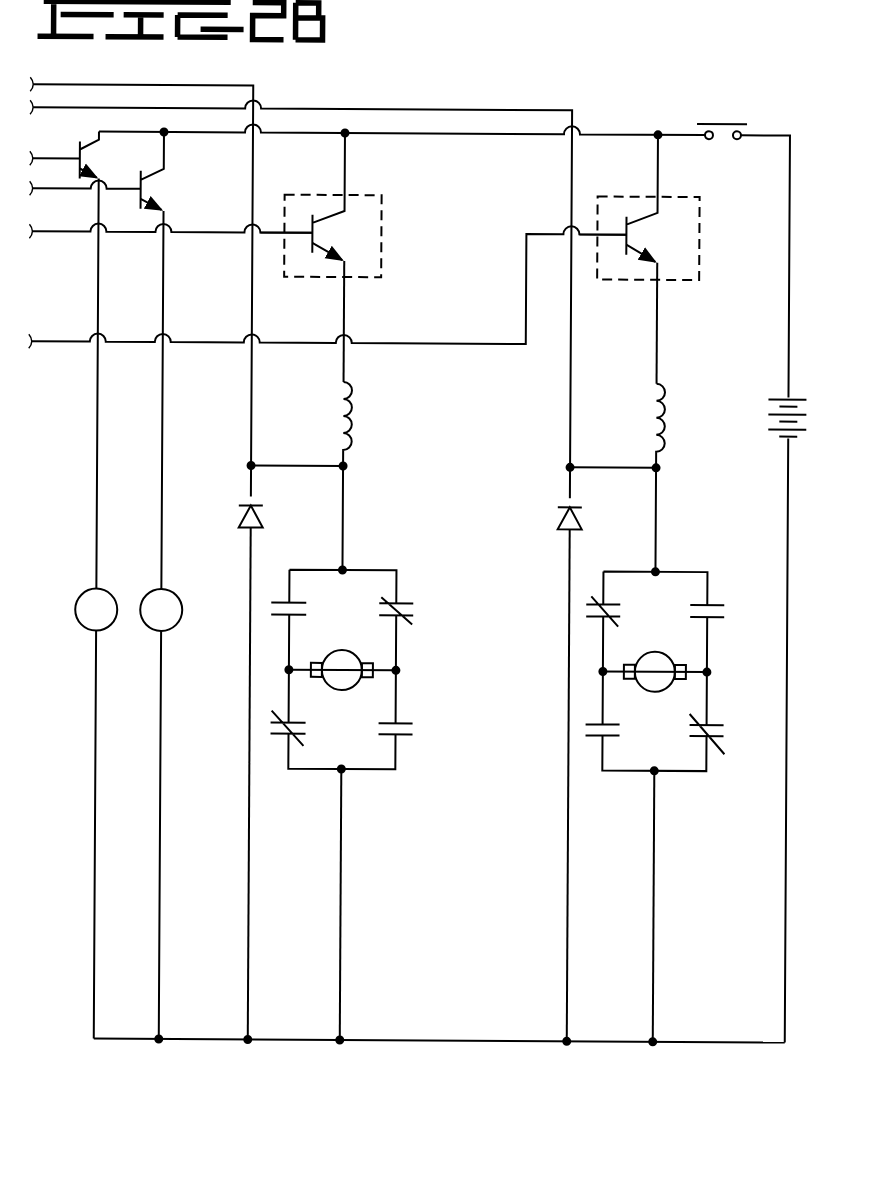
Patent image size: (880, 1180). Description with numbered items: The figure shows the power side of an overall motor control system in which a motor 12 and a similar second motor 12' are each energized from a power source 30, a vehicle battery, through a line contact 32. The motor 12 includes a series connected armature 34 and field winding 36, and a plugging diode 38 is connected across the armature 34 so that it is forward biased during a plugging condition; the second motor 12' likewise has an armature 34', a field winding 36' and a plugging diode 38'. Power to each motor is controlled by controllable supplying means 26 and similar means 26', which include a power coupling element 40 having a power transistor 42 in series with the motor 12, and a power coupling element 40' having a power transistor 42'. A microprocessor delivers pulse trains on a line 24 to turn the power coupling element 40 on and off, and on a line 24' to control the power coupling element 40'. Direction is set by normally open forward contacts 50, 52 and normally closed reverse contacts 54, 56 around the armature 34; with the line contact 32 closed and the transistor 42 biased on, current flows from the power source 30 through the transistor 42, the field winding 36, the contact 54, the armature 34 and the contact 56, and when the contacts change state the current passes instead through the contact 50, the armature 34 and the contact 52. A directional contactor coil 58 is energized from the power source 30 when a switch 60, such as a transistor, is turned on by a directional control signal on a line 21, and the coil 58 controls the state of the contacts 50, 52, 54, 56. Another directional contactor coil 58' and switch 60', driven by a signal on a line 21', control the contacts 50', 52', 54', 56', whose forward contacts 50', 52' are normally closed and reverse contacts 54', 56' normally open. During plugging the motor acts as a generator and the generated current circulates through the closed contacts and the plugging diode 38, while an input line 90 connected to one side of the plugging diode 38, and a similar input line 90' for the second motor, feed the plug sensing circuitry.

The motor 12 is at (636, 803).
The second motor 12' is at (362, 791).
The line 21 is at (86, 202).
The line 21' is at (56, 144).
The line 24 is at (329, 283).
The line 24' is at (172, 216).
The controllable supplying means 26 is at (676, 244).
The controllable supplying means 26' is at (361, 238).
The power source 30 is at (777, 393).
The line contact 32 is at (716, 122).
The armature 34 is at (654, 657).
The armature 34' is at (342, 654).
The field winding 36 is at (689, 476).
The field winding 36' is at (378, 476).
The plugging diode 38 is at (538, 519).
The plugging diode 38' is at (219, 508).
The power coupling element 40 is at (691, 260).
The power coupling element 40' is at (375, 258).
The power transistor 42 is at (605, 200).
The power transistor 42' is at (292, 199).
The forward contact 50 is at (714, 596).
The forward contact 50' is at (397, 583).
The forward contact 52 is at (579, 761).
The forward contact 52' is at (292, 760).
The reverse contact 54 is at (579, 606).
The reverse contact 54' is at (295, 583).
The reverse contact 56 is at (713, 715).
The reverse contact 56' is at (408, 711).
The directional contactor coil 58 is at (177, 588).
The directional contactor coil 58' is at (105, 587).
The switch 60 is at (139, 585).
The switch 60' is at (95, 572).
The input line 90 is at (589, 431).
The input line 90' is at (277, 428).